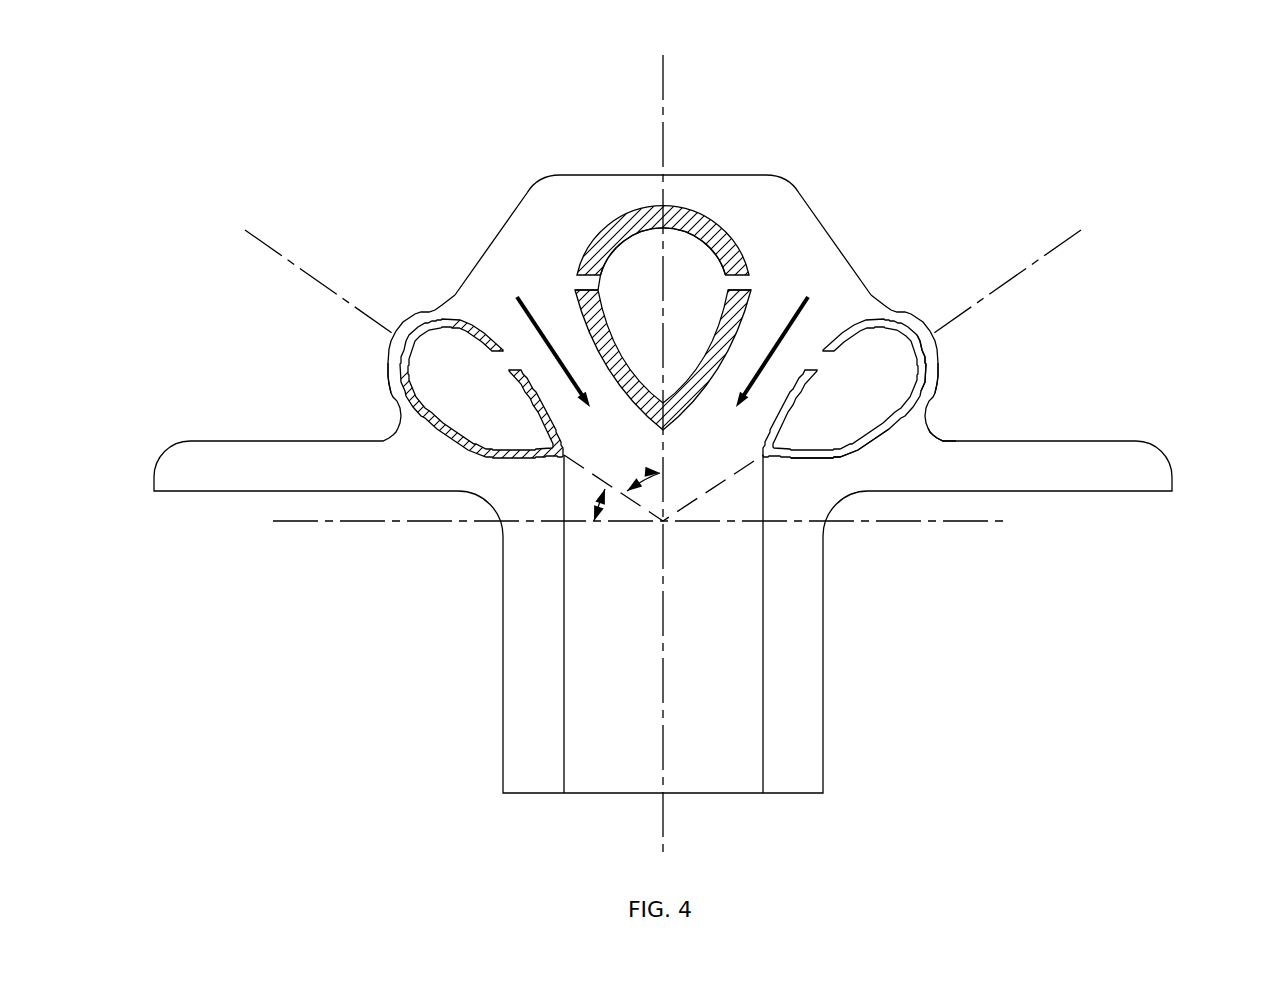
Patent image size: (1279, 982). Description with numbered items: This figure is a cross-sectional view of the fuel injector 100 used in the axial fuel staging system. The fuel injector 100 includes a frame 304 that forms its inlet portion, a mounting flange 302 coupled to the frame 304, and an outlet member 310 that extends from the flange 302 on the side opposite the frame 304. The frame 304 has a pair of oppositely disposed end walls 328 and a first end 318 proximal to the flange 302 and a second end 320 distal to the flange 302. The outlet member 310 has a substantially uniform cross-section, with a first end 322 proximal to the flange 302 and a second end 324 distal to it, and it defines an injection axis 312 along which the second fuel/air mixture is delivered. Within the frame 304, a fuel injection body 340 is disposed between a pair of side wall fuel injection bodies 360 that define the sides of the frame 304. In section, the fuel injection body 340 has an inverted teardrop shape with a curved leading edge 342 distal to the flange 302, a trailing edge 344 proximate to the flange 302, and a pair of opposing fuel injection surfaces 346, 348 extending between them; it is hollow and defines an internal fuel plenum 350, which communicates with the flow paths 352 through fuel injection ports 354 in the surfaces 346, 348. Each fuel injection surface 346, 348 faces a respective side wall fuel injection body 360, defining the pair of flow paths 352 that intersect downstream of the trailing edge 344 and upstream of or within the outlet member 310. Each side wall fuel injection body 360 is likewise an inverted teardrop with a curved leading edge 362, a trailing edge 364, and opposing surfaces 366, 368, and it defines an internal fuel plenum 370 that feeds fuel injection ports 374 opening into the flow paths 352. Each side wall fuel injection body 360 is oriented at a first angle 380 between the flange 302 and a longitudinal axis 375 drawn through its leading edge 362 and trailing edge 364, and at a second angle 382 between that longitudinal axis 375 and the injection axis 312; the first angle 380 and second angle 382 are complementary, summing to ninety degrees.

The fuel injector 100 is at (1142, 110).
The mounting flange 302 is at (1118, 448).
The frame 304 is at (485, 205).
The outlet member 310 is at (838, 686).
The injection axis 312 is at (668, 833).
The first end of the frame 318 is at (922, 433).
The second end of the frame 320 is at (745, 175).
The first end of the outlet member 322 is at (490, 488).
The second end of the outlet member 324 is at (517, 753).
The end walls 328 is at (808, 213).
The fuel injection body 340 is at (612, 207).
The leading edge 342 is at (675, 207).
The trailing edge 344 is at (670, 445).
The fuel injection surface 346 is at (573, 305).
The fuel injection surface 348 is at (750, 302).
The internal fuel plenum 350 is at (682, 311).
The flow paths 352 is at (543, 310).
The fuel injection ports 354 is at (755, 285).
The side wall fuel injection bodies 360 is at (393, 393).
The leading edge 362 is at (907, 323).
The trailing edge 364 is at (808, 492).
The first end / surface of side wall fuel injection body 366 is at (843, 333).
The second end / surface of side wall fuel injection body 368 is at (853, 453).
The internal fuel plenum 370 is at (492, 401).
The fuel injection ports 374 is at (517, 340).
The longitudinal axis of the side wall fuel injection body 375 is at (312, 277).
The first angle 380 is at (600, 507).
The second angle 382 is at (638, 478).